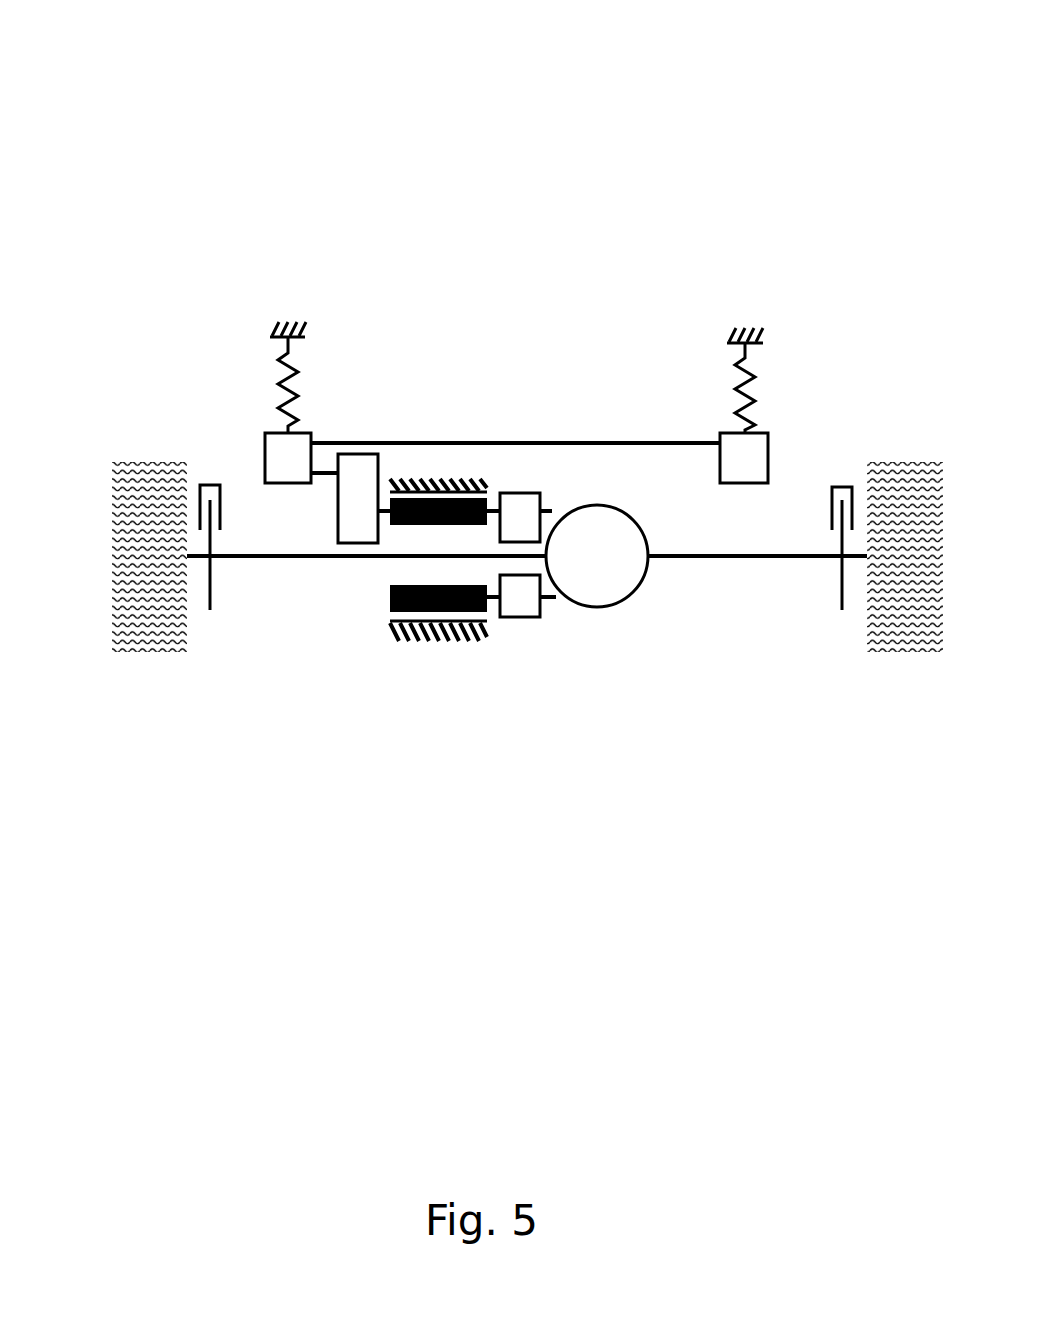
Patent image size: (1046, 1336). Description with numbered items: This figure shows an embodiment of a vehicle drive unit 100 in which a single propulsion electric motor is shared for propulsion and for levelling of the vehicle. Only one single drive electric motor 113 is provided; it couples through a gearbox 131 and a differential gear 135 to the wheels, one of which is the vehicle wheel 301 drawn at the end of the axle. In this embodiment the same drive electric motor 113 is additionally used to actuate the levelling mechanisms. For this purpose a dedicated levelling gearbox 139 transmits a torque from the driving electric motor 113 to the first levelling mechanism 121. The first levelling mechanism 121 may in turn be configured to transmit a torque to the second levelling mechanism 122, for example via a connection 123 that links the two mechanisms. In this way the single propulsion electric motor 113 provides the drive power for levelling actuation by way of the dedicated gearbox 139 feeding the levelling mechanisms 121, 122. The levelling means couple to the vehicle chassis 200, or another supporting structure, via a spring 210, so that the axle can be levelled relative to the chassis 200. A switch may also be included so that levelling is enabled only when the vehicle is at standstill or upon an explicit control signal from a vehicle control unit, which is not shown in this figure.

The drive unit 100 is at (291, 156).
The vehicle chassis 200 is at (282, 320).
The spring 210 is at (278, 378).
The vehicle wheel 301 is at (148, 463).
The first levelling mechanism 121 is at (288, 483).
The second levelling mechanism 122 is at (768, 462).
The connection 123 is at (635, 438).
The levelling gearbox 139 is at (358, 543).
The single drive electric motor 113 is at (422, 640).
The gearbox 131 is at (522, 617).
The differential gear 135 is at (645, 580).